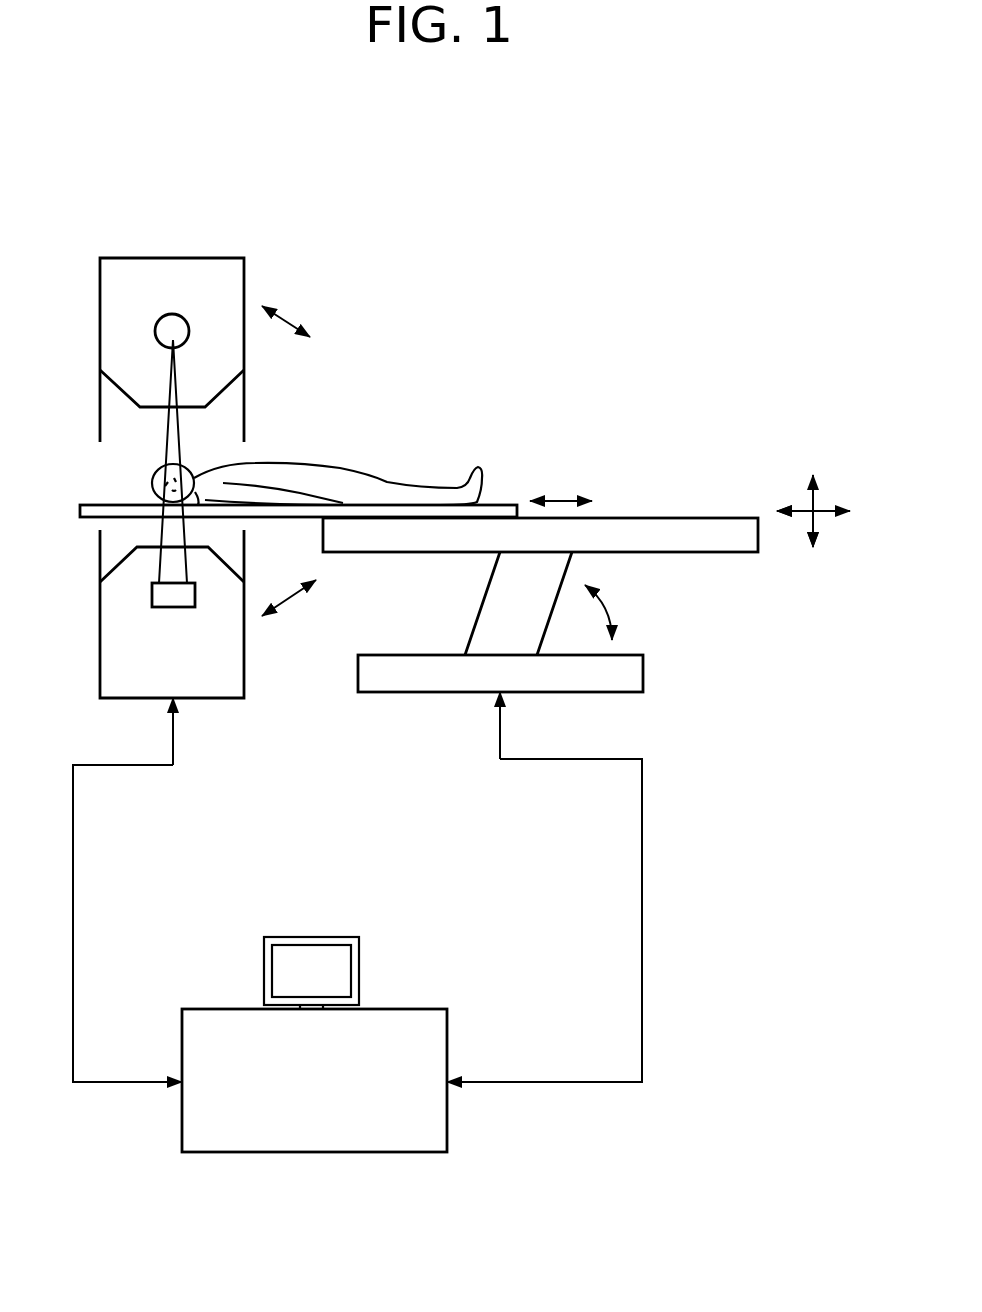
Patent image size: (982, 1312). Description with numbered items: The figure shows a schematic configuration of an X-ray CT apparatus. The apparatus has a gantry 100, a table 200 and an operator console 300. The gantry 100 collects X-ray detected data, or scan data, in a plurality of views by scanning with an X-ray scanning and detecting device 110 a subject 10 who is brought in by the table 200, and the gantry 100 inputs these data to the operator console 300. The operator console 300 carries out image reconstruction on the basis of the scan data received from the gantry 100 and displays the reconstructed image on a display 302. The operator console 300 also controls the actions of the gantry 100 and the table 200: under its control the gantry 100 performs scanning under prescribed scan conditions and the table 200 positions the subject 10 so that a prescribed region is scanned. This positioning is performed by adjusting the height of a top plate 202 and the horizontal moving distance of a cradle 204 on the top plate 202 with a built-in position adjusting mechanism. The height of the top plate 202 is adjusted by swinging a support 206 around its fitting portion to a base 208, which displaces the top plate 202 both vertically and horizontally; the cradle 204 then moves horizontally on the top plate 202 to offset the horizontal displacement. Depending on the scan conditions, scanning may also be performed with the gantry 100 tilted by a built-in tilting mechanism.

The gantry 100 is at (160, 240).
The X-ray scanning and detecting device 110 is at (187, 322).
The subject 10 is at (272, 472).
The table 200 is at (493, 475).
The cradle 204 is at (397, 503).
The top plate 202 is at (643, 528).
The support 206 is at (522, 638).
The base 208 is at (607, 678).
The operator console 300 is at (327, 1153).
The display 302 is at (333, 937).